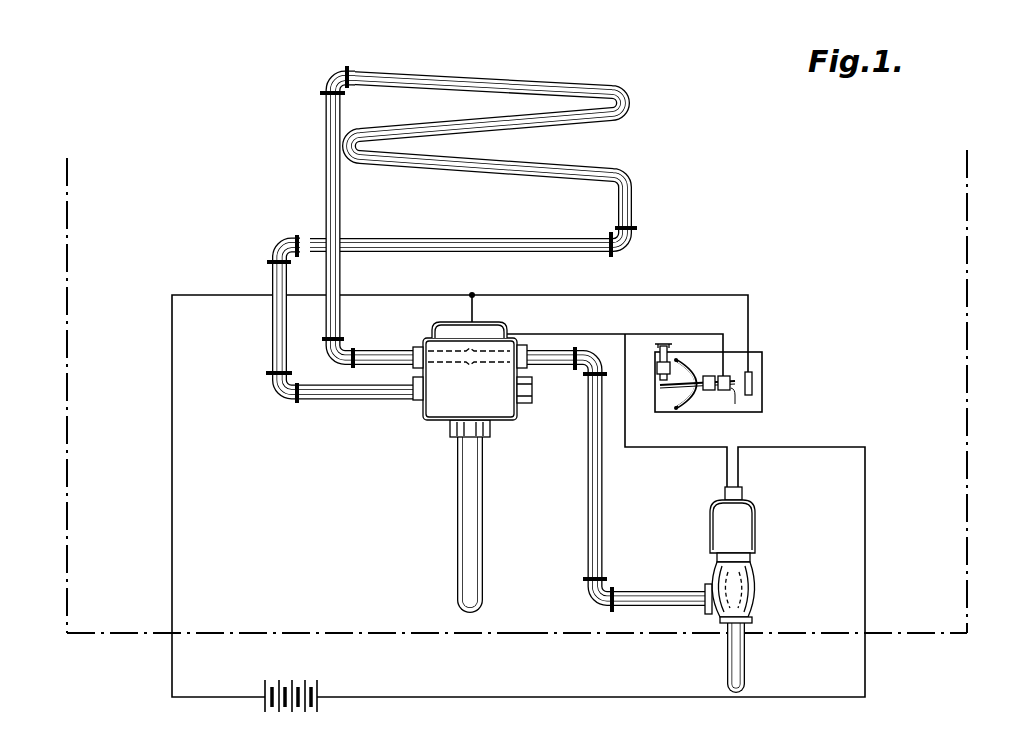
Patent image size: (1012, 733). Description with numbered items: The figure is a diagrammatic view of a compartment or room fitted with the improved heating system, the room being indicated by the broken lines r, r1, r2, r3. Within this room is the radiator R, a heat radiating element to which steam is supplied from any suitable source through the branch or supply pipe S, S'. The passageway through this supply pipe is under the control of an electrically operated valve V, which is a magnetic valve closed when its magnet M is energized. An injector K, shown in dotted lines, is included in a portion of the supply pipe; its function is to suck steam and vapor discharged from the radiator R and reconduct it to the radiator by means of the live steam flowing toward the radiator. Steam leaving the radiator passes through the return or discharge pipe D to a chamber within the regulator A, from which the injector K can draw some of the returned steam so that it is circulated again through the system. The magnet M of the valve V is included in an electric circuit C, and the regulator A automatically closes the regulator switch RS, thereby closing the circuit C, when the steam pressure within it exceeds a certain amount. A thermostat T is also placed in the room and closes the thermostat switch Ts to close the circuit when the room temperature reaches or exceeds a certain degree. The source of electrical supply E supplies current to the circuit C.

The broken line r is at (56, 391).
The broken line r1 is at (286, 647).
The broken line r2 is at (758, 630).
The broken line r3 is at (980, 385).
The radiator R is at (633, 188).
The supply pipe S is at (366, 217).
The supply pipe S' is at (619, 480).
The return pipe D is at (277, 327).
The regulator A is at (472, 469).
The regulator switch RS is at (473, 333).
The injector K is at (469, 365).
The electric circuit C is at (518, 494).
The thermostat T is at (762, 378).
The thermostat switch Ts is at (735, 387).
The magnet M is at (747, 520).
The valve V is at (753, 582).
The source of electrical supply E is at (291, 682).